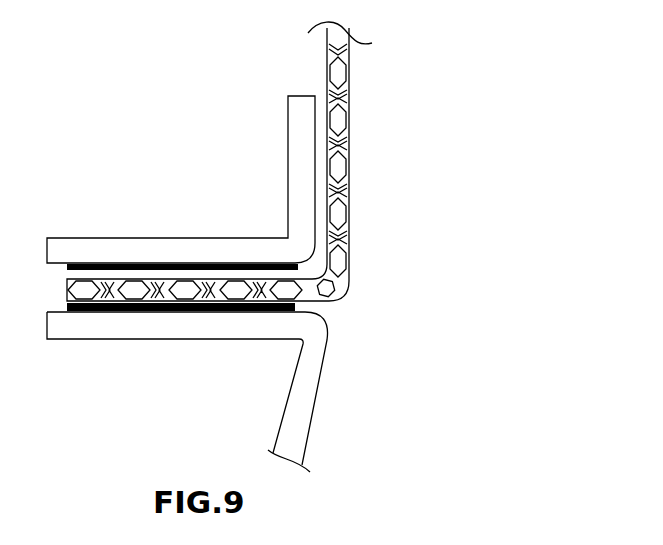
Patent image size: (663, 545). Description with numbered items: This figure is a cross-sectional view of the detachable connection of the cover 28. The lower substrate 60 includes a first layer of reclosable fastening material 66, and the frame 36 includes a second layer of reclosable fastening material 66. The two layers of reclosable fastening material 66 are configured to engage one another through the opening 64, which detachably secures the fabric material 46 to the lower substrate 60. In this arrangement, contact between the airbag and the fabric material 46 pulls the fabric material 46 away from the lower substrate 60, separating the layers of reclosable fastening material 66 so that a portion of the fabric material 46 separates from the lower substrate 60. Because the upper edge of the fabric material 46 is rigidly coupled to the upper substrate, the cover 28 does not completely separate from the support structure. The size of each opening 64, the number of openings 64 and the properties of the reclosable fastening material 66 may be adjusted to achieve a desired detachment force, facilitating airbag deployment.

The cover 28 is at (440, 112).
The frame 36 is at (92, 258).
The fabric material 46 is at (350, 204).
The lower substrate 60 is at (197, 328).
The opening 64 is at (145, 312).
The reclosable fastening material 66 is at (162, 305).